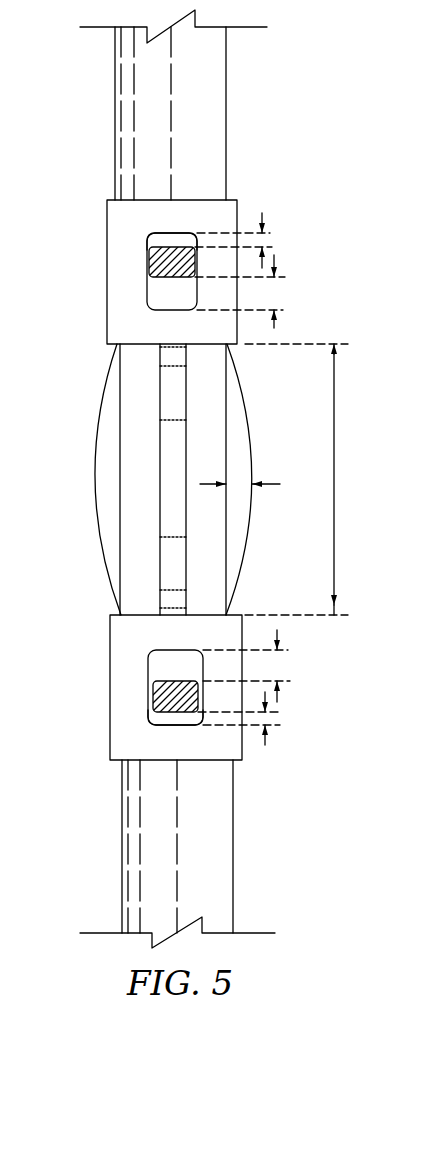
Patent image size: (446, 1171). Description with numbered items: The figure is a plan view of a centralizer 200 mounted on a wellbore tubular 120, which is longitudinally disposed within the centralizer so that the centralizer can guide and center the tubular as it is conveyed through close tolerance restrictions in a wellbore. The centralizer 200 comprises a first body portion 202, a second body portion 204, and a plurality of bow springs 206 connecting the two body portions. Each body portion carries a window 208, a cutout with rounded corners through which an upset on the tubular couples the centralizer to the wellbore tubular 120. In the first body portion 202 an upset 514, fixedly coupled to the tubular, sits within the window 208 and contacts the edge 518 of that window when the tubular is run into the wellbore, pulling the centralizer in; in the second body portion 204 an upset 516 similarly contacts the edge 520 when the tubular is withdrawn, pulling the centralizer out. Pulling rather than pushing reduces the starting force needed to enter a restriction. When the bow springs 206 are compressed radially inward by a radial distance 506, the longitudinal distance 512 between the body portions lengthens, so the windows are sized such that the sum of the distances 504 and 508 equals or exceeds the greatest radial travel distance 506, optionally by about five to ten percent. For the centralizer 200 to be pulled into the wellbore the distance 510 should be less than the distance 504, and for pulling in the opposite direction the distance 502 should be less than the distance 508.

The wellbore tubular 120 is at (115, 109).
The centralizer 200 is at (302, 216).
The first body portion 202 is at (110, 636).
The second body portion 204 is at (107, 331).
The bow springs 206 is at (98, 420).
The window 208 is at (147, 295).
The distance 502 is at (237, 229).
The distance 504 is at (242, 291).
The radial distance 506 is at (259, 484).
The distance 508 is at (249, 666).
The distance 510 is at (242, 731).
The distance 512 is at (334, 423).
The upset 514 is at (153, 696).
The upset 516 is at (149, 252).
The edge 518 is at (175, 725).
The edge 520 is at (168, 233).